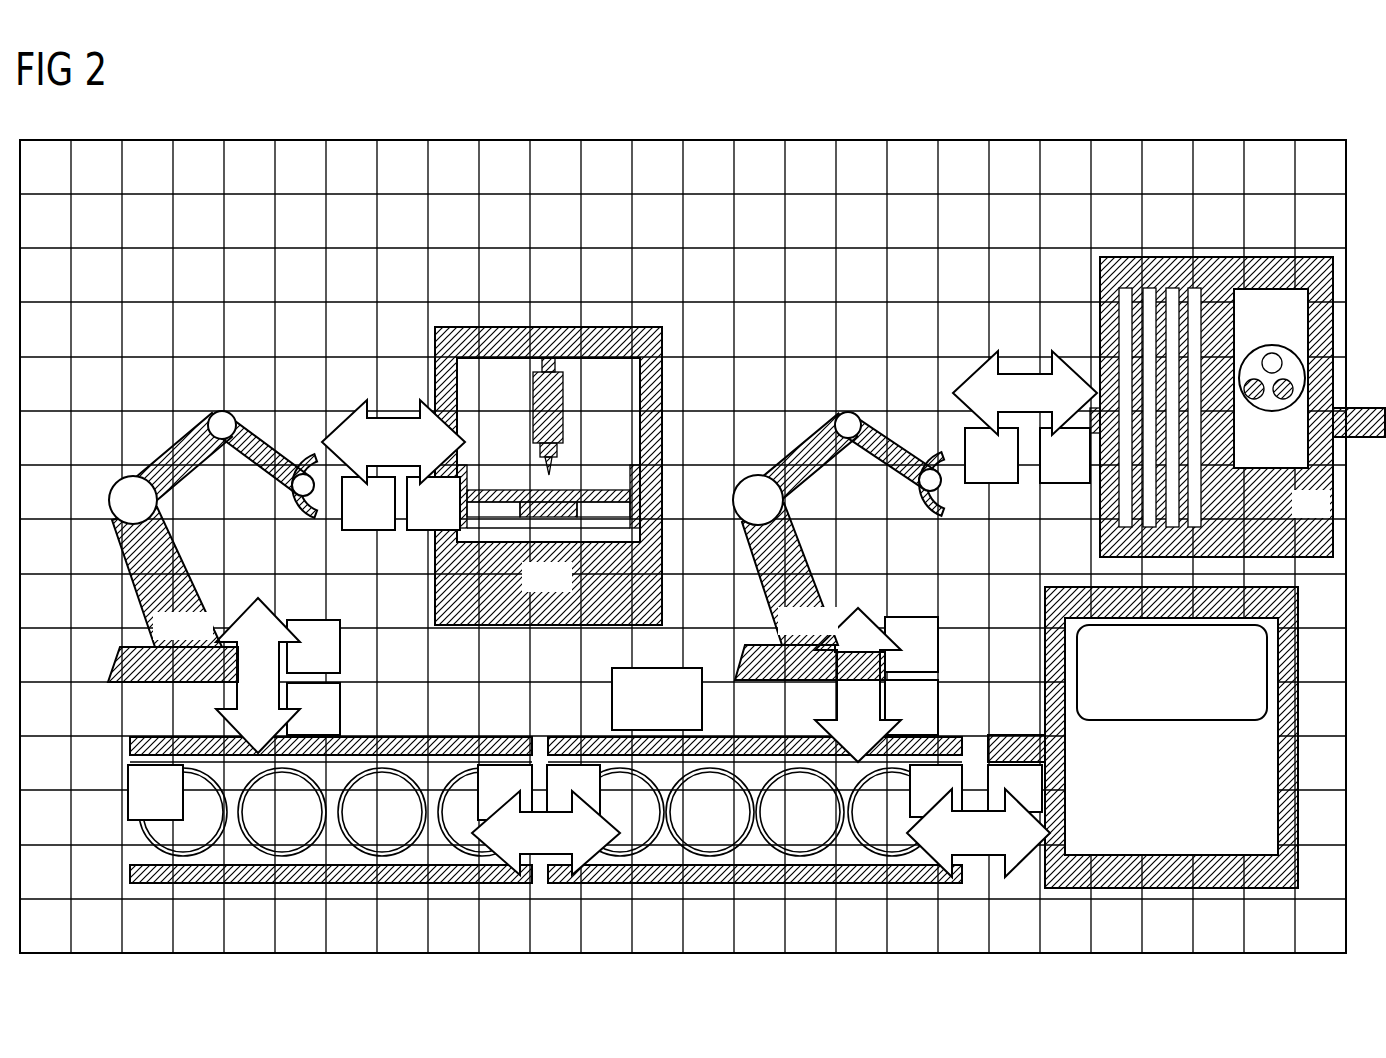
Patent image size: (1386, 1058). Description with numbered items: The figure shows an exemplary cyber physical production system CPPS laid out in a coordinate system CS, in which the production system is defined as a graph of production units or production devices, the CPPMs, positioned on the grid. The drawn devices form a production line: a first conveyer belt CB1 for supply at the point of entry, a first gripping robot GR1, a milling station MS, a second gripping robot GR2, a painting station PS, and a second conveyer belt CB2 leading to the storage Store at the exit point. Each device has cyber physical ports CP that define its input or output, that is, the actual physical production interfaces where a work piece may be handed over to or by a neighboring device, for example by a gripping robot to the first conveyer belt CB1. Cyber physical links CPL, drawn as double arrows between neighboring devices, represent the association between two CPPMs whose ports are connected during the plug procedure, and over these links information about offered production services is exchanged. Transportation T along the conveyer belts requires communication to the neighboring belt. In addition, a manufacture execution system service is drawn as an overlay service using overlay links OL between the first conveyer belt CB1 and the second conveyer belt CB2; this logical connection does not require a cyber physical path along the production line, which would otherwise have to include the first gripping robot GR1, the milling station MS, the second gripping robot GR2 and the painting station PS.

The cyber physical production system CPPS is at (683, 526).
The coordinate system CS is at (1120, 170).
The painting station PS is at (1237, 385).
The cyber physical link CPL is at (392, 408).
The cyber physical port CP is at (956, 423).
The milling station MS is at (548, 476).
The first gripping robot GR1 is at (212, 546).
The second gripping robot GR2 is at (838, 546).
The overlay link OL is at (541, 761).
The first conveyer belt CB1 is at (331, 832).
The second conveyer belt CB2 is at (755, 833).
The storage Store is at (1143, 737).
The input module I is at (364, 792).
The transportation T is at (496, 812).